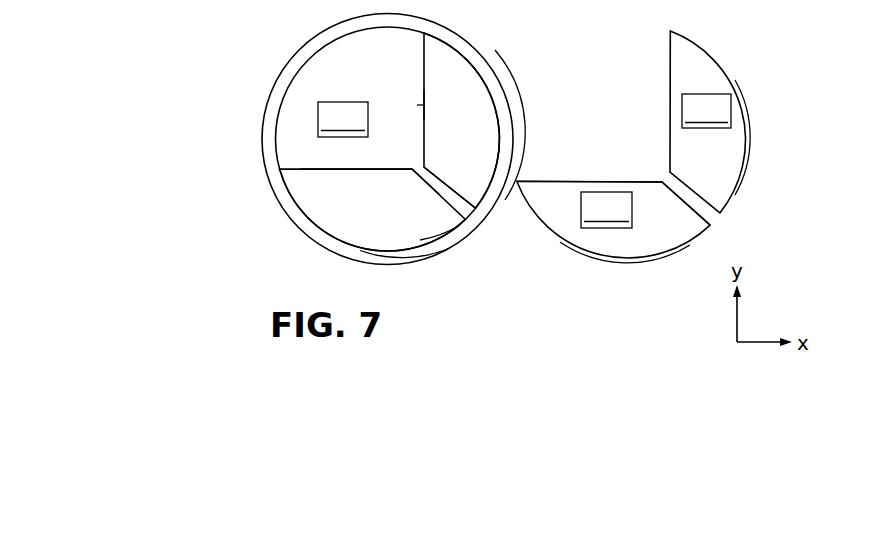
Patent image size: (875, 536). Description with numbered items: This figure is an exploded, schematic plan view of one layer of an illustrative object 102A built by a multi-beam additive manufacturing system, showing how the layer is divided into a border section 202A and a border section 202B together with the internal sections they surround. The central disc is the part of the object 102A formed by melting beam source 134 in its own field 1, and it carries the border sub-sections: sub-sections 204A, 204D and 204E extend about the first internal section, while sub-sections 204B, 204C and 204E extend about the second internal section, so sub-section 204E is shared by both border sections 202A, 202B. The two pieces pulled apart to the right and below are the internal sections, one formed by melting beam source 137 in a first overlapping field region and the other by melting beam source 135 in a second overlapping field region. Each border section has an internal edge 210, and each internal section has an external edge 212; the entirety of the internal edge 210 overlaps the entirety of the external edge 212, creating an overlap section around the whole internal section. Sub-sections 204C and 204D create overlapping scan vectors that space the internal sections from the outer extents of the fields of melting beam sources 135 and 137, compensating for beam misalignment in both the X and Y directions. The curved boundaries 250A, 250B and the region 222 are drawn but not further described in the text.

The object 102A is at (258, 198).
The substrate surface 222 is at (298, 80).
The border section 202A is at (430, 273).
The border section 202B is at (515, 99).
The sub-section 204A is at (443, 244).
The sub-section 204B is at (490, 80).
The sub-section 204C is at (417, 105).
The sub-section 204D is at (318, 162).
The sub-section 204E is at (440, 181).
The field 1 is at (403, 97).
The internal edge 210 is at (440, 197).
The melting beam source 134 is at (343, 119).
The melting beam source 137 is at (660, 287).
The melting beam source 135 is at (708, 122).
The external edge 212 is at (605, 182).
The curved edge 250A is at (612, 247).
The curved edge 250B is at (723, 178).